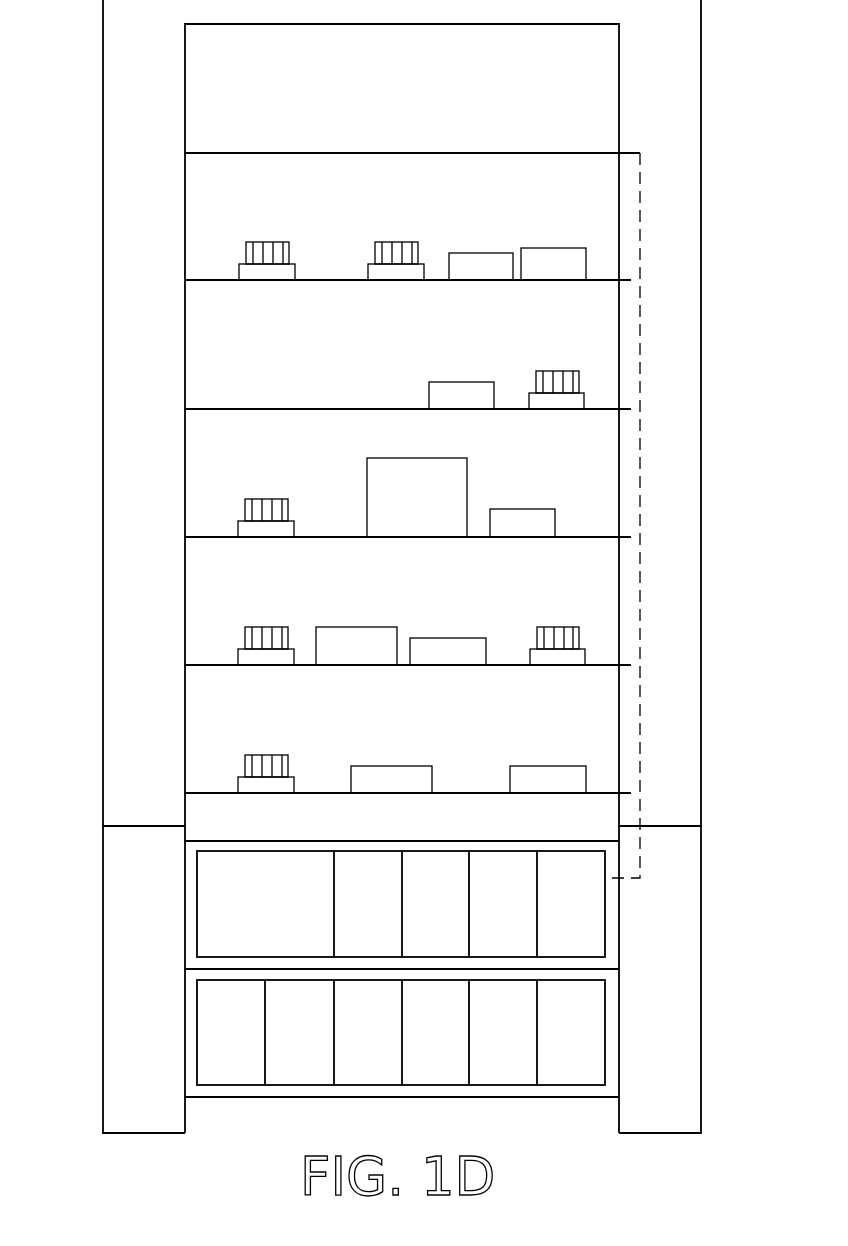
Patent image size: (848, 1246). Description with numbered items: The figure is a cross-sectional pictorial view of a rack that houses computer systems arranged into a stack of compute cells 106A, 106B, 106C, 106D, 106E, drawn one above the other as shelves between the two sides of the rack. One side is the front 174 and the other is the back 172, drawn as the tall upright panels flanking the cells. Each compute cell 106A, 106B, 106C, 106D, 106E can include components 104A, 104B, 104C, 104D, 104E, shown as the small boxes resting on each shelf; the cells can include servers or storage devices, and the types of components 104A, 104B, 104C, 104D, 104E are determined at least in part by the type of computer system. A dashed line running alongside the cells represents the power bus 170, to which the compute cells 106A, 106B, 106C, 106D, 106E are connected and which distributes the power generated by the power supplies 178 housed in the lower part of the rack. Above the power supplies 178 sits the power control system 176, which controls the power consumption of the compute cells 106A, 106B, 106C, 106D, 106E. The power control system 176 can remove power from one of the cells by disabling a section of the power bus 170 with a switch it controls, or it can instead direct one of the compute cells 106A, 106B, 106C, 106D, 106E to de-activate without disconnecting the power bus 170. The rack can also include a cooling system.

The power bus 170 is at (640, 345).
The back 172 is at (701, 63).
The front 174 is at (103, 112).
The power control system 176 is at (238, 905).
The power supplies 178 is at (580, 914).
The components 104A is at (382, 243).
The components 104B is at (536, 371).
The components 104C is at (367, 485).
The components 104D is at (430, 638).
The components 104E is at (388, 766).
The compute cell 106A is at (185, 280).
The compute cell 106B is at (185, 409).
The compute cell 106C is at (185, 537).
The compute cell 106D is at (185, 665).
The compute cell 106E is at (185, 793).